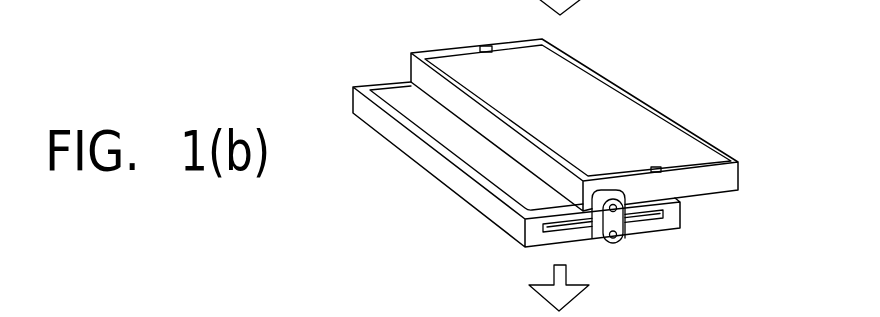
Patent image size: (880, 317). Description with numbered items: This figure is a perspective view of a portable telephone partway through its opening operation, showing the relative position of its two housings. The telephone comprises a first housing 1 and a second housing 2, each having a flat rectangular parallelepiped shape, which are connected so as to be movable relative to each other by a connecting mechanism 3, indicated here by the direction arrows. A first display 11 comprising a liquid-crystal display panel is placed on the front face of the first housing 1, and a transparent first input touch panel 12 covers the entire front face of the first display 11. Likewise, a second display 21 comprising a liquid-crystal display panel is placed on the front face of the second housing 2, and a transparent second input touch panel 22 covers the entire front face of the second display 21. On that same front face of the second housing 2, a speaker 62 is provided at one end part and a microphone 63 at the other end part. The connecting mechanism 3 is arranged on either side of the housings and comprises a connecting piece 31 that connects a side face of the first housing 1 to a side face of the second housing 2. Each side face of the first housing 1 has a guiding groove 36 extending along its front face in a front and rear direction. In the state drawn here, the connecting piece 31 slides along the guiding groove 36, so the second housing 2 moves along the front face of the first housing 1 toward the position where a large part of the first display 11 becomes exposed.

The first housing 1 is at (501, 180).
The second housing 2 is at (585, 158).
The connecting mechanism 3 is at (650, 285).
The first display 11 is at (501, 180).
The first input touch panel 12 is at (501, 180).
The second display 21 is at (592, 105).
The second input touch panel 22 is at (592, 105).
The connecting piece 31 is at (609, 217).
The guiding groove 36 is at (657, 216).
The speaker 62 is at (485, 47).
The microphone 63 is at (653, 168).